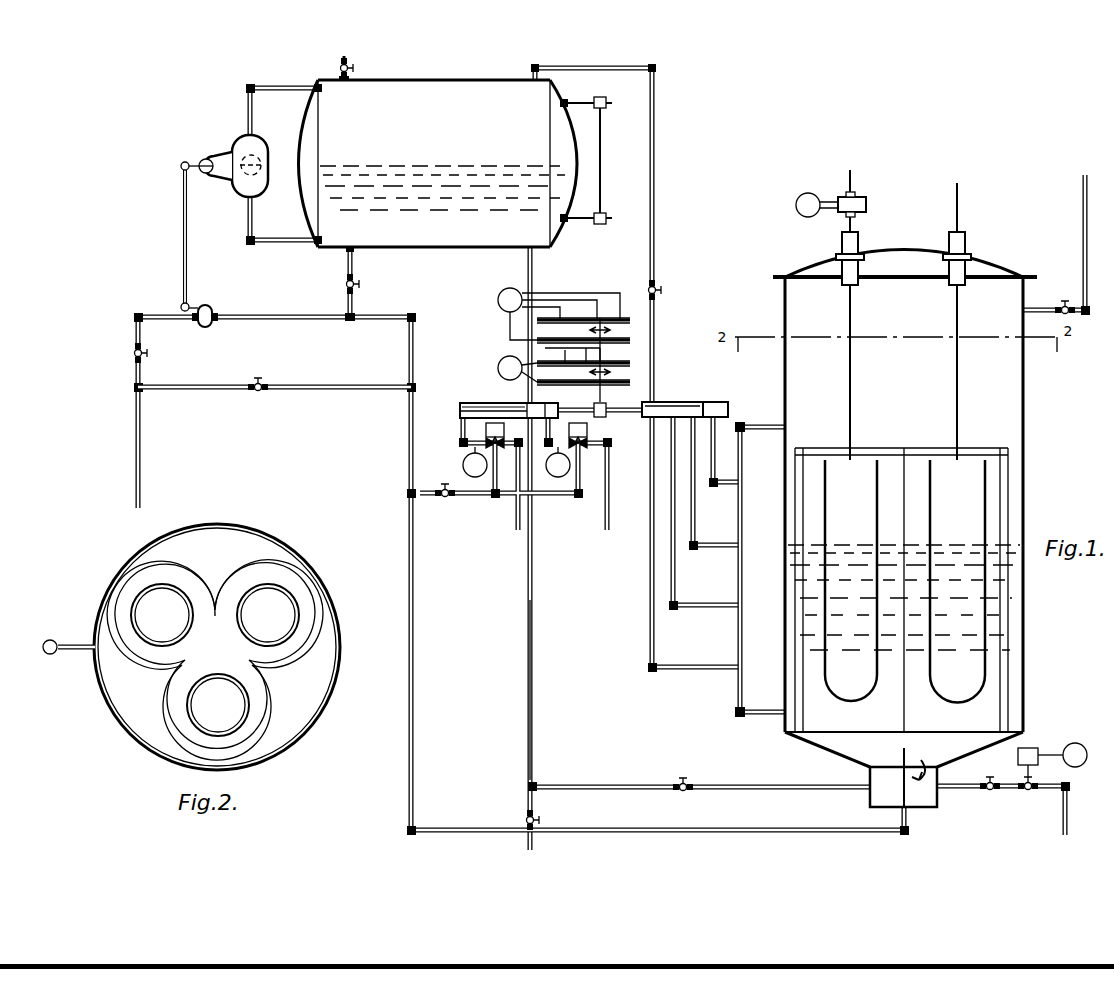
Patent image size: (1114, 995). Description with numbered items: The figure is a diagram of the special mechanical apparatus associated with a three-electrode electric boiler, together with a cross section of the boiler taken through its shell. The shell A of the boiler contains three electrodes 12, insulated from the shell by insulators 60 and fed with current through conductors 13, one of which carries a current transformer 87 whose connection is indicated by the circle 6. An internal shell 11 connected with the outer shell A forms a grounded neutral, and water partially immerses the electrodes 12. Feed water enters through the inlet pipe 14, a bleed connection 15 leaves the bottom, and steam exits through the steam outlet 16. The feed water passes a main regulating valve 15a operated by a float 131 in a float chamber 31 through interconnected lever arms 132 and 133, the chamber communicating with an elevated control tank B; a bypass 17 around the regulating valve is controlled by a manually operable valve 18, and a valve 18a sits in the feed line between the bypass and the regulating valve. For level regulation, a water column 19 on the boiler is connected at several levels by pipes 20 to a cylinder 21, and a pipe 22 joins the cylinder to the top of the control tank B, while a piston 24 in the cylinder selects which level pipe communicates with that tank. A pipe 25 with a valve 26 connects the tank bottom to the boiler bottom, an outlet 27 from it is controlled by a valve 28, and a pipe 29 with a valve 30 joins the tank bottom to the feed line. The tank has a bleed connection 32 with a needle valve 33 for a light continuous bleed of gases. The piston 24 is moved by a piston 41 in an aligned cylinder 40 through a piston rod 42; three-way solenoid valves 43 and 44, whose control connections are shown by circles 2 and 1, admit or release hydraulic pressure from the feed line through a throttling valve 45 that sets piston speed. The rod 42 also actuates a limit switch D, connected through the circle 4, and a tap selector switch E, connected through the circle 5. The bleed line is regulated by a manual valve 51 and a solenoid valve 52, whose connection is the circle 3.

In FIG. 1, the internal shell 11 is at (802, 452).
In FIG. 2, the internal shell 11 is at (187, 566).
In FIG. 1, the electrodes 12 is at (905, 581).
In FIG. 2, the electrodes 12 is at (215, 660).
In FIG. 1, the conductors 13 is at (971, 347).
In FIG. 1, the inlet pipe for feed water 14 is at (413, 628).
In FIG. 1, the bleed connection 15 is at (954, 790).
In FIG. 1, the main regulating valve 15a is at (205, 324).
In FIG. 1, the steam outlet 16 is at (1042, 308).
In FIG. 1, the bypass 17 is at (196, 386).
In FIG. 1, the manually operable valve 18 is at (258, 393).
In FIG. 1, the valve 18a is at (130, 353).
In FIG. 1, the water column 19 is at (742, 567).
In FIG. 2, the water column 19 is at (52, 641).
In FIG. 1, the pipes 20 is at (736, 482).
In FIG. 1, the cylinder 21 is at (680, 402).
In FIG. 1, the pipe 22 is at (654, 113).
In FIG. 1, the piston 24 is at (718, 402).
In FIG. 1, the pipe 25 is at (532, 274).
In FIG. 1, the valve 26 is at (683, 778).
In FIG. 1, the outlet 27 is at (533, 684).
In FIG. 1, the valve 28 is at (524, 820).
In FIG. 1, the pipe 29 is at (353, 273).
In FIG. 1, the valve 30 is at (344, 286).
In FIG. 1, the float chamber 31 is at (236, 190).
In FIG. 1, the bleed connection 32 is at (340, 58).
In FIG. 1, the needle valve 33 is at (339, 72).
In FIG. 1, the cylinder 40 is at (462, 403).
In FIG. 1, the piston 41 is at (493, 410).
In FIG. 1, the piston rod 42 is at (600, 418).
In FIG. 1, the three-way solenoid operated valve 43 is at (470, 445).
In FIG. 1, the three-way solenoid operated valve 44 is at (560, 445).
In FIG. 1, the throttling valve 45 is at (445, 500).
In FIG. 1, the manually regulated valve 51 is at (990, 794).
In FIG. 1, the solenoid operated valve 52 is at (1040, 779).
In FIG. 1, the insulators 60 is at (965, 247).
In FIG. 1, the current transformer 87 is at (868, 203).
In FIG. 1, the float 131 is at (256, 150).
In FIG. 1, the lever arm 132 is at (181, 163).
In FIG. 1, the lever arm 133 is at (181, 304).
In FIG. 1, the circle denoting connection 1 is at (558, 462).
In FIG. 1, the circle denoting connection 2 is at (475, 462).
In FIG. 1, the circle denoting connection 3 is at (1075, 755).
In FIG. 1, the circle denoting connection 4 is at (510, 368).
In FIG. 1, the circle denoting connection 5 is at (510, 300).
In FIG. 1, the circle denoting connection 6 is at (808, 205).
In FIG. 1, the shell A is at (1025, 392).
In FIG. 2, the shell A is at (339, 644).
In FIG. 1, the elevated control tank B is at (465, 78).
In FIG. 1, the limit switch D is at (530, 357).
In FIG. 1, the tap selector switch E is at (632, 320).